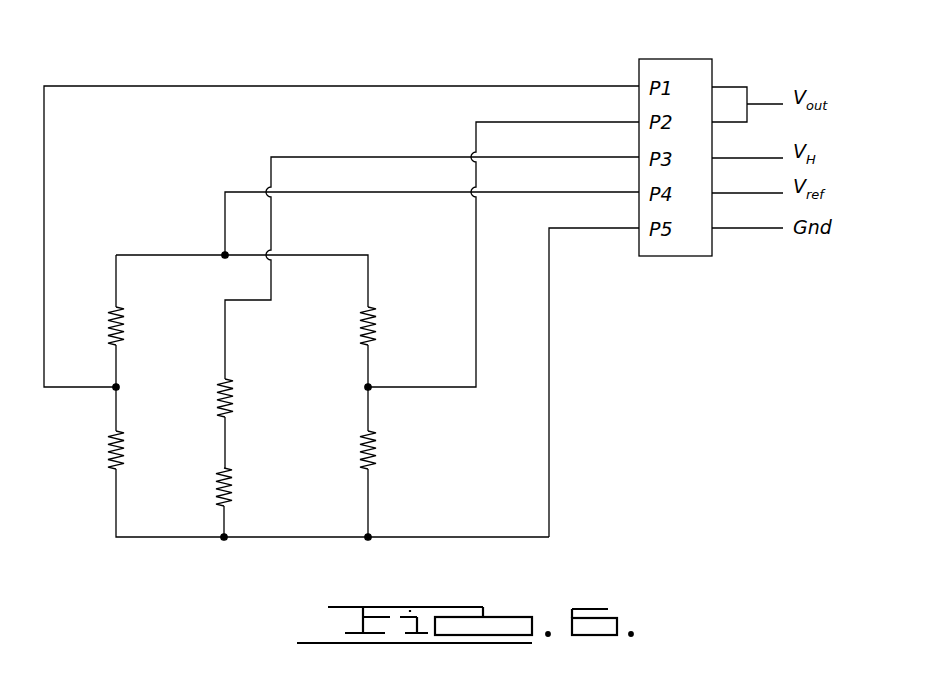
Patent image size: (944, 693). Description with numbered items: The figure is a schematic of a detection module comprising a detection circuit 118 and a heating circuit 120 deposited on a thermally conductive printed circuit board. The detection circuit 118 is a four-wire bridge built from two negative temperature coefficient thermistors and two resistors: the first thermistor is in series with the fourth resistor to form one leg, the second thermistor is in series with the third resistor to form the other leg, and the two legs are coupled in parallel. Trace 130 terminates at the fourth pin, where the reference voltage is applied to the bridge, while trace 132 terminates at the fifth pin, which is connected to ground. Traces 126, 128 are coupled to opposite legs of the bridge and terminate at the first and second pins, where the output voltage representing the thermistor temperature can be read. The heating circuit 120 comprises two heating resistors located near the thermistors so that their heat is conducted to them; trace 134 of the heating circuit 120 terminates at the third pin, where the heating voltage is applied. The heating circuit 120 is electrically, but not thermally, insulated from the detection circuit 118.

The detection circuit 118 is at (181, 574).
The heating circuit 120 is at (254, 368).
The trace 126 is at (405, 86).
The trace 128 is at (455, 388).
The trace 130 is at (225, 225).
The trace 132 is at (549, 387).
The trace 134 is at (297, 157).